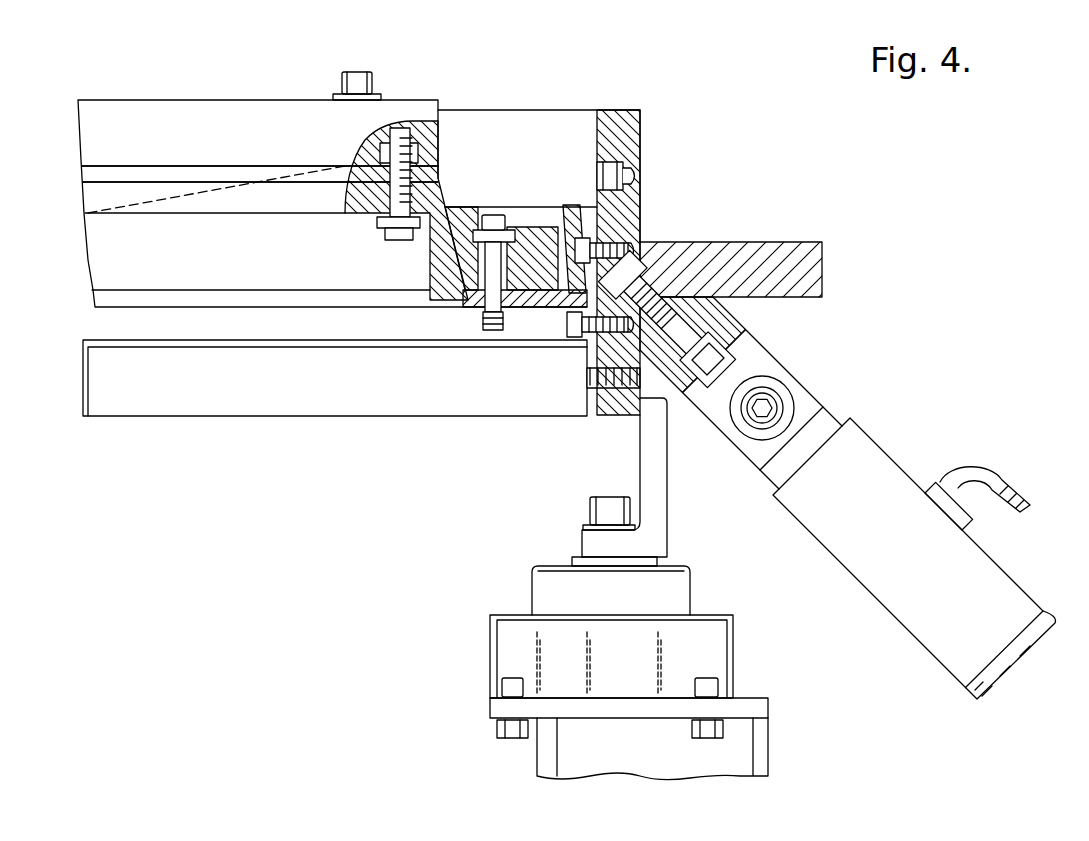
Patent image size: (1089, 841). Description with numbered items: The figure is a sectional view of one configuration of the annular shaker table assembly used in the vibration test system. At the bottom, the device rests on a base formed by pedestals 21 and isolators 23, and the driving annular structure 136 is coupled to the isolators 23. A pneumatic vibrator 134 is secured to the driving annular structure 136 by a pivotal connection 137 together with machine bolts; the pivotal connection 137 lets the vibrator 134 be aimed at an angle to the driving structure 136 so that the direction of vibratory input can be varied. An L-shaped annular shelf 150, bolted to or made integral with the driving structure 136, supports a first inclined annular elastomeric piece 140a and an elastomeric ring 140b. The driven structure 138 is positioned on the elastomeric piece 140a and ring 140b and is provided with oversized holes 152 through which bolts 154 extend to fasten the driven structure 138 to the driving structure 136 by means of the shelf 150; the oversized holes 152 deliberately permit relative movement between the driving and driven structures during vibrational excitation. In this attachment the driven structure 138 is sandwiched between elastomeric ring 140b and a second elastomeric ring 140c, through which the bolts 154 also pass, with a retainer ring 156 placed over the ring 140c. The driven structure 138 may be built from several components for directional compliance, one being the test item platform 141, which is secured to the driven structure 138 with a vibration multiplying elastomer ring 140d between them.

The test item platform 141 is at (272, 107).
The vibration multiplying elastomer ring 140d is at (347, 192).
The driven structure 138 is at (458, 258).
The retainer ring 156 is at (473, 228).
The oversized holes 152 is at (527, 230).
The first inclined annular elastomeric piece 140a is at (636, 215).
The driving annular structure 136 is at (816, 266).
The second elastomeric ring 140c is at (468, 252).
The elastomeric ring 140b is at (488, 296).
The bolts 154 is at (478, 330).
The L-shaped annular shelf 150 is at (570, 311).
The pivotal connection 137 is at (770, 388).
The pneumatic vibrator 134 is at (860, 455).
The isolators 23 is at (505, 657).
The pedestals 21 is at (750, 753).